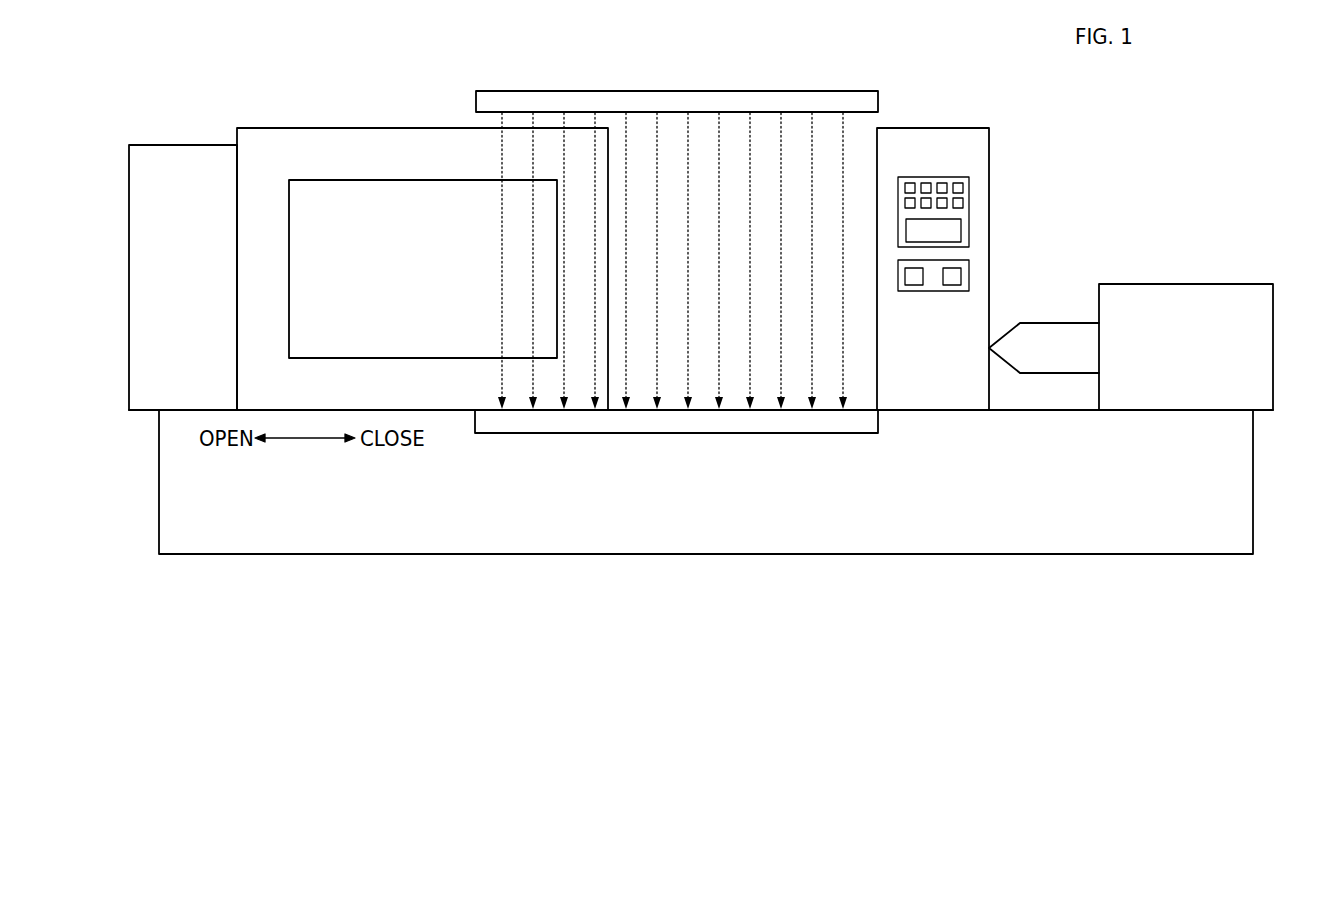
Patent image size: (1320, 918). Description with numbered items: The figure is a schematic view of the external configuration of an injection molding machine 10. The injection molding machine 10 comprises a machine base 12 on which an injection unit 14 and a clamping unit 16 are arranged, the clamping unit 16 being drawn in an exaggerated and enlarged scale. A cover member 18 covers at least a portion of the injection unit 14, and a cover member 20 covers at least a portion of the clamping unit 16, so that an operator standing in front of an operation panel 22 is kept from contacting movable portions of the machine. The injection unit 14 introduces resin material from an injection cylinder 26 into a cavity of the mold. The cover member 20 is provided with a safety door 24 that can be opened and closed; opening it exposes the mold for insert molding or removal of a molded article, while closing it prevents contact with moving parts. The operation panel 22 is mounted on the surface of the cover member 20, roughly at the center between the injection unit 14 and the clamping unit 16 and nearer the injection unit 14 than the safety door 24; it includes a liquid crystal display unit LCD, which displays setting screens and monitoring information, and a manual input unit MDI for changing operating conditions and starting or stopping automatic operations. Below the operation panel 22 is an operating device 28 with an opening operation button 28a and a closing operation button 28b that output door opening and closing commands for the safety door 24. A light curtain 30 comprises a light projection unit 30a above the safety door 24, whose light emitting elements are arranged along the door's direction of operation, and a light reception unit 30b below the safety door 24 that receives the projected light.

The injection molding machine 10 is at (1087, 100).
The machine base 12 is at (1197, 549).
The injection unit 14 is at (1186, 311).
The clamping unit 16 is at (651, 276).
The cover member 18 is at (1143, 282).
The cover member 20 is at (170, 143).
The operation panel 22 is at (970, 242).
The safety door 24 is at (397, 127).
The injection cylinder 26 is at (1062, 328).
The operating device 28 is at (961, 310).
The opening operation button 28a is at (913, 292).
The closing operation button 28b is at (952, 292).
The light curtain 30 is at (651, 304).
The light projection unit 30a is at (494, 101).
The light reception unit 30b is at (676, 446).
The manual input unit MDI is at (970, 191).
The liquid crystal display unit LCD is at (962, 231).